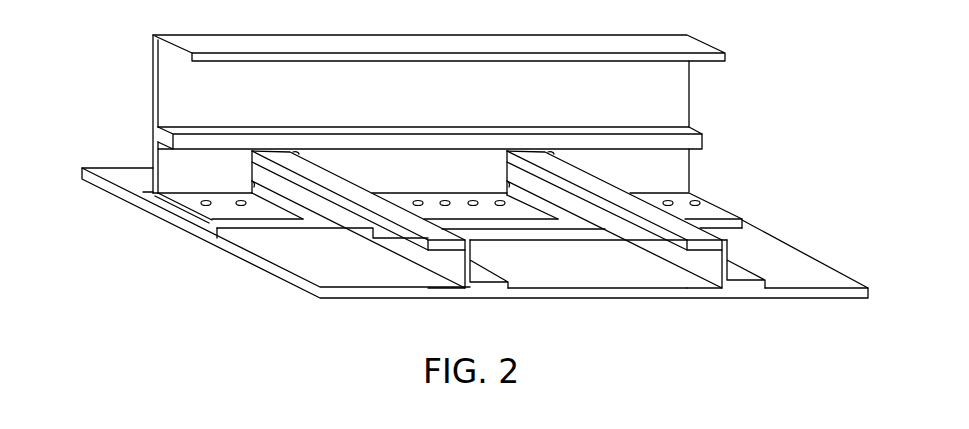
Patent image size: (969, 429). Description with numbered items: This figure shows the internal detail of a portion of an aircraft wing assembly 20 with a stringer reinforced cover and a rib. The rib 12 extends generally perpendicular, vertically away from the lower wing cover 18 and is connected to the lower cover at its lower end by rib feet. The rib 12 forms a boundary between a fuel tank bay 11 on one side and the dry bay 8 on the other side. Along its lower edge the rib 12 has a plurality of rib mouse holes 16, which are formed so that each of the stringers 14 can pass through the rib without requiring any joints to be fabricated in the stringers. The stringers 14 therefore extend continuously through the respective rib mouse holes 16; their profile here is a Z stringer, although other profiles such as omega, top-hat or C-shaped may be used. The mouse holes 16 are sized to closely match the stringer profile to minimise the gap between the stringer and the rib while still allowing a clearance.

The fuel tank bay 11 is at (106, 103).
The rib 12 is at (677, 108).
The dry bay 8 is at (241, 281).
The aircraft wing assembly 20 is at (789, 158).
The rib mouse holes 16 is at (251, 184).
The lower wing cover 18 is at (383, 278).
The stringers 14 is at (710, 268).